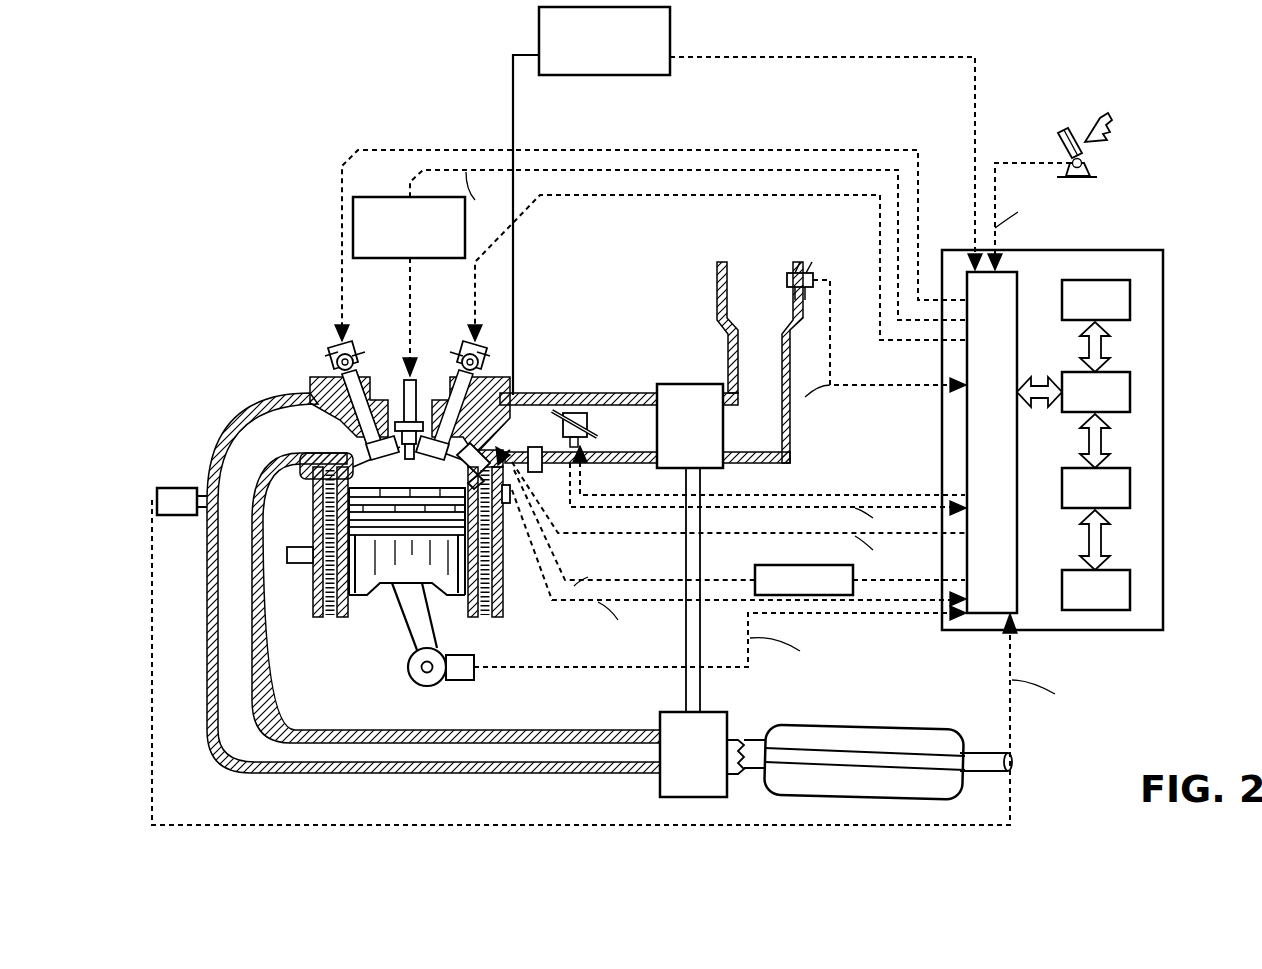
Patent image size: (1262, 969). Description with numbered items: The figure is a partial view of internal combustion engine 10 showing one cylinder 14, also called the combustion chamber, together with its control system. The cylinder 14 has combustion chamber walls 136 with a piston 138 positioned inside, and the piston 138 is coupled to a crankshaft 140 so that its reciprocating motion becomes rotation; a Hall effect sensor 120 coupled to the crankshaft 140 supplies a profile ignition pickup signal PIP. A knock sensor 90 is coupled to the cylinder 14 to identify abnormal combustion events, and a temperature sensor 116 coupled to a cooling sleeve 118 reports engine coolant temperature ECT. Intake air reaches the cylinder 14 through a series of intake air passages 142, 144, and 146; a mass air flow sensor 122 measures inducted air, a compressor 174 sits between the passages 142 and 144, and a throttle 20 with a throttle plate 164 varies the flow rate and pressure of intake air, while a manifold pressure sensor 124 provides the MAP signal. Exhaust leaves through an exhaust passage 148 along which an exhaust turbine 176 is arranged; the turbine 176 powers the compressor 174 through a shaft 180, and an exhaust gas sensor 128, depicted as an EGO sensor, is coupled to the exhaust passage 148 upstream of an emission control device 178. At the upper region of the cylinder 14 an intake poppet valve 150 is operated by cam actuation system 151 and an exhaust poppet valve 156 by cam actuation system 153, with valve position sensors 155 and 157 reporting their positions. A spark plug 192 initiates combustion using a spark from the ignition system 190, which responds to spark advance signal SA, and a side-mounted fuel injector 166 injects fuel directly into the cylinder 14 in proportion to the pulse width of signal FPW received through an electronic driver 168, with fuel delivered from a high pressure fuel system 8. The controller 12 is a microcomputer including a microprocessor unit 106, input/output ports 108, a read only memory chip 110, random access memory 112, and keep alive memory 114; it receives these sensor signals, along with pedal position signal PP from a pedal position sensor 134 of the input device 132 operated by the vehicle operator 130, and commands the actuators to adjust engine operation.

The internal combustion engine 10 is at (143, 86).
The high pressure fuel system 8 is at (670, 22).
The ignition system 190 is at (375, 197).
The controller 12 is at (1152, 252).
The input/output ports 108 is at (1018, 280).
The read only memory chip 110 is at (1132, 300).
The microprocessor unit 106 is at (1132, 392).
The random access memory 112 is at (1132, 490).
The keep alive memory 114 is at (1132, 590).
The vehicle operator 130 is at (1112, 128).
The input device 132 is at (1058, 140).
The pedal position sensor 134 is at (1092, 168).
The intake air passage 142 is at (760, 362).
The mass air flow sensor 122 is at (805, 270).
The intake air passage 144 is at (645, 428).
The intake air passage 146 is at (534, 423).
The compressor 174 is at (673, 384).
The shaft 180 is at (690, 675).
The exhaust turbine 176 is at (660, 785).
The emission control device 178 is at (920, 728).
The throttle 20 is at (575, 411).
The throttle plate 164 is at (548, 410).
The manifold pressure sensor 124 is at (538, 475).
The electronic driver 168 is at (757, 566).
The exhaust passage 148 is at (433, 583).
The exhaust gas sensor 128 is at (157, 497).
The exhaust poppet valve 156 is at (365, 437).
The valve position sensor 157 is at (324, 360).
The cam actuation system 153 is at (352, 345).
The intake poppet valve 150 is at (442, 430).
The cam actuation system 151 is at (455, 342).
The valve position sensor 155 is at (478, 368).
The spark plug 192 is at (406, 410).
The fuel injector 166 is at (711, 508).
The cylinder 14 is at (405, 470).
The temperature sensor 116 is at (505, 503).
The cooling sleeve 118 is at (508, 503).
The knock sensor 90 is at (303, 564).
The combustion chamber walls 136 is at (352, 605).
The piston 138 is at (392, 572).
The crankshaft 140 is at (418, 684).
The Hall effect sensor 120 is at (462, 684).